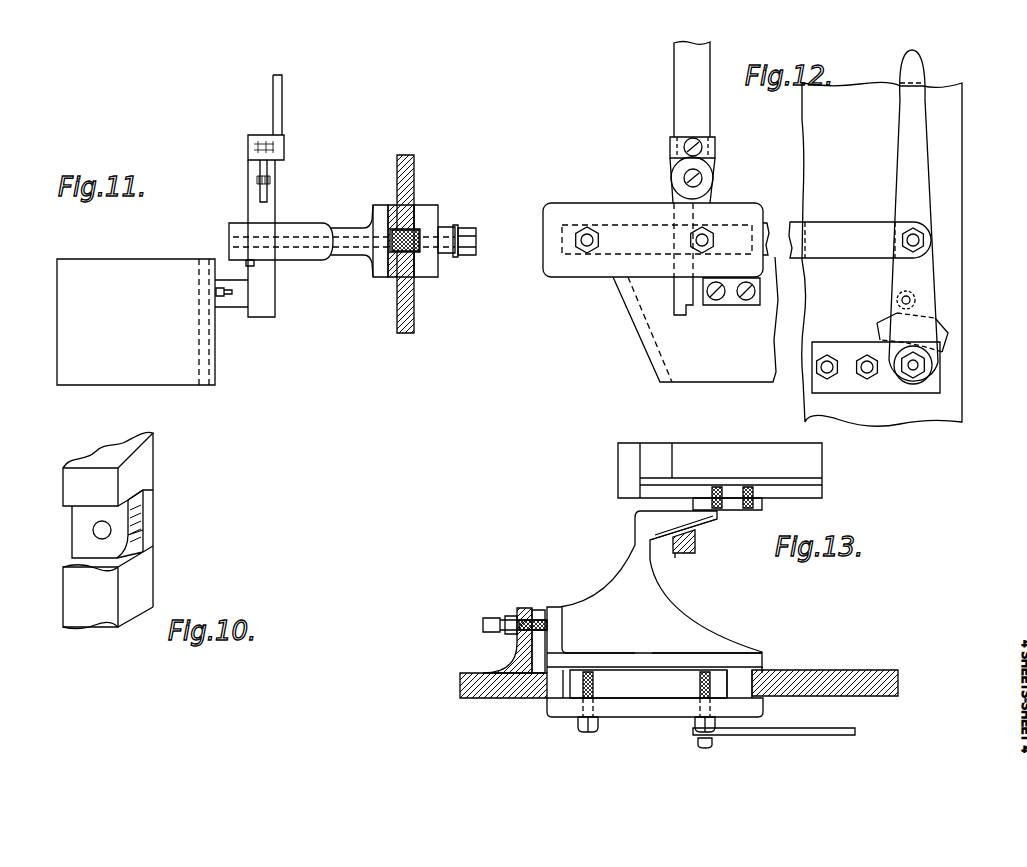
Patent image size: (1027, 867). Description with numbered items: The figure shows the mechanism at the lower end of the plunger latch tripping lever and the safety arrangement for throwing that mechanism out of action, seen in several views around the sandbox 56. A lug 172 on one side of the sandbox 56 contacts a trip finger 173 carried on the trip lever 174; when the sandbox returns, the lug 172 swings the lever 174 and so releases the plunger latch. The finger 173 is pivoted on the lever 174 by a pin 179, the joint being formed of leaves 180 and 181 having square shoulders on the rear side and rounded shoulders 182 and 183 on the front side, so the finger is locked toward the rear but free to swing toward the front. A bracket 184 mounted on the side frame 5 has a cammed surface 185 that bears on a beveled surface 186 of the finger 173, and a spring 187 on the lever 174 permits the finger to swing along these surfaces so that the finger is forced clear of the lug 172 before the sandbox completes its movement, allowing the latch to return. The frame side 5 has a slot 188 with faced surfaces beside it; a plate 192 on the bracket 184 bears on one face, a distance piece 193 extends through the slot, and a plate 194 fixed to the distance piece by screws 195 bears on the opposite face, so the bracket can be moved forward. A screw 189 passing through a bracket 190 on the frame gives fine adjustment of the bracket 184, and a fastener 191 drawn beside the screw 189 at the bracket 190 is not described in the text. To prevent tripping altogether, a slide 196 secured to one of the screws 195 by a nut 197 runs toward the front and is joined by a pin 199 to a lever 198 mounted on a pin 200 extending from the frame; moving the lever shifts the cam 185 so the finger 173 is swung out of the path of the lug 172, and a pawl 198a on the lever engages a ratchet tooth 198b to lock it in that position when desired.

In FIG. 11, the side frame 5 is at (416, 300).
In FIG. 12, the side frame 5 is at (945, 290).
In FIG. 13, the side frame 5 is at (853, 673).
In FIG. 11, the sandbox 56 is at (136, 322).
In FIG. 12, the sandbox 56 is at (695, 319).
In FIG. 13, the sandbox 56 is at (720, 470).
In FIG. 11, the lug 172 is at (243, 312).
In FIG. 12, the lug 172 is at (715, 305).
In FIG. 13, the lug 172 is at (765, 504).
In FIG. 11, the trip finger 173 is at (277, 297).
In FIG. 12, the trip finger 173 is at (684, 315).
In FIG. 13, the trip finger 173 is at (676, 558).
In FIG. 10, the trip finger 173 is at (140, 587).
In FIG. 11, the trip lever 174 is at (247, 148).
In FIG. 12, the trip lever 174 is at (670, 147).
In FIG. 10, the trip lever 174 is at (75, 488).
In FIG. 12, the pin 179 is at (700, 182).
In FIG. 10, the pin 179 is at (93, 538).
In FIG. 11, the leaf 180 is at (265, 180).
In FIG. 10, the leaf 180 is at (86, 548).
In FIG. 10, the leaf 181 is at (150, 531).
In FIG. 10, the rounded shoulder 182 is at (140, 545).
In FIG. 10, the rounded shoulder 183 is at (150, 503).
In FIG. 11, the bracket 184 is at (290, 223).
In FIG. 12, the bracket 184 is at (766, 239).
In FIG. 13, the bracket 184 is at (655, 610).
In FIG. 11, the cammed surface 185 is at (240, 234).
In FIG. 13, the cammed surface 185 is at (665, 530).
In FIG. 11, the beveled surface 186 is at (246, 221).
In FIG. 13, the beveled surface 186 is at (698, 540).
In FIG. 11, the spring 187 is at (283, 105).
In FIG. 12, the spring 187 is at (700, 101).
In FIG. 13, the slot 188 is at (740, 684).
In FIG. 13, the screw 189 is at (540, 615).
In FIG. 13, the bracket 190 is at (524, 648).
In FIG. 13, the bolt 191 is at (512, 618).
In FIG. 11, the plate 192 is at (382, 278).
In FIG. 13, the plate 192 is at (685, 658).
In FIG. 11, the distance piece 193 is at (412, 252).
In FIG. 13, the distance piece 193 is at (645, 693).
In FIG. 11, the plate 194 is at (432, 212).
In FIG. 12, the plate 194 is at (606, 272).
In FIG. 13, the plate 194 is at (650, 718).
In FIG. 12, the screws 195 is at (587, 227).
In FIG. 13, the screws 195 is at (590, 735).
In FIG. 11, the slide 196 is at (455, 255).
In FIG. 12, the slide 196 is at (860, 240).
In FIG. 13, the slide 196 is at (770, 736).
In FIG. 11, the nut 197 is at (478, 240).
In FIG. 12, the nut 197 is at (704, 227).
In FIG. 13, the nut 197 is at (712, 748).
In FIG. 12, the lever 198 is at (912, 163).
In FIG. 12, the pawl 198a is at (897, 302).
In FIG. 12, the ratchet tooth 198b is at (885, 325).
In FIG. 12, the pin 199 is at (925, 240).
In FIG. 12, the pin 200 is at (925, 367).